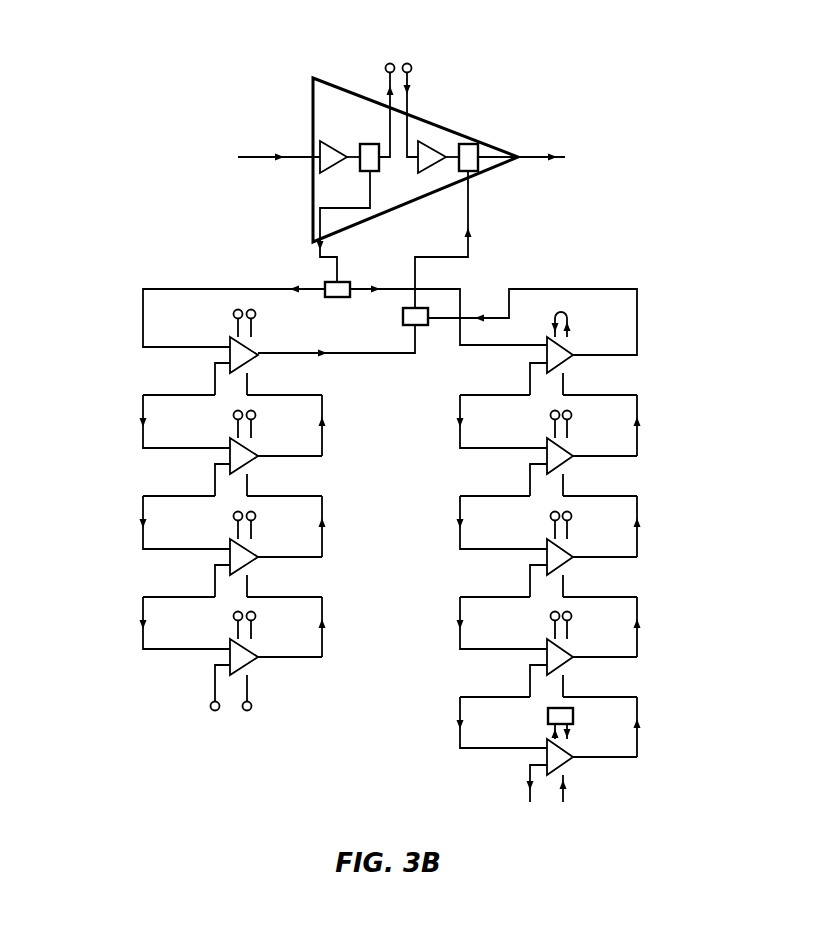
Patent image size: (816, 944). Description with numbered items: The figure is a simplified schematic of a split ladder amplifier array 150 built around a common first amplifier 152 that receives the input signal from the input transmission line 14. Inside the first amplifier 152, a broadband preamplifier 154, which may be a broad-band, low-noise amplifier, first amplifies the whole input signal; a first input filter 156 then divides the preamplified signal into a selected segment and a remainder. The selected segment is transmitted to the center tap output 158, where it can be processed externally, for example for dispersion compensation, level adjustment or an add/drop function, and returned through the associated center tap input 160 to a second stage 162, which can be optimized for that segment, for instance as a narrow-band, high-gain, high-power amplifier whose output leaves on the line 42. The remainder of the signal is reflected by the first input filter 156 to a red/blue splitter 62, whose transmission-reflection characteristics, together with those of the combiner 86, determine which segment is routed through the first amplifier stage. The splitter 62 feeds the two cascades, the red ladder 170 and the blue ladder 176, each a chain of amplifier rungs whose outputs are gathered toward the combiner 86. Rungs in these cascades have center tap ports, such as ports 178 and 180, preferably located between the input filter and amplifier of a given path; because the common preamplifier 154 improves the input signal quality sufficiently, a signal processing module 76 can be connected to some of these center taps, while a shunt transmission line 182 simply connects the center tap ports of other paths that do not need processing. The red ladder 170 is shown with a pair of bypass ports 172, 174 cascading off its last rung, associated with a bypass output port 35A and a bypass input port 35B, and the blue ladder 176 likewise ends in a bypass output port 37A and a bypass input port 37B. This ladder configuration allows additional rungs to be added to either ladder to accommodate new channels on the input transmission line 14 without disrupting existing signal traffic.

The input transmission line 14 is at (253, 157).
The output signal line 42 is at (545, 157).
The red/blue splitter 62 is at (351, 283).
The signal processing module 76 is at (548, 716).
The combiner 86 is at (403, 316).
The split ladder amplifier array 150 is at (638, 165).
The first amplifier 152 is at (357, 95).
The broadband preamplifier 154 is at (316, 152).
The first input filter 156 is at (366, 143).
The center tap output 158 is at (390, 63).
The center tap input 160 is at (407, 63).
The second stage 162 is at (426, 143).
The red ladder 170 is at (104, 417).
The bypass port 172 is at (214, 711).
The bypass port 174 is at (248, 711).
The blue ladder 176 is at (680, 415).
The center tap port 178 is at (233, 333).
The center tap port 180 is at (255, 333).
The shunt transmission line 182 is at (561, 312).
The bypass output port 35A is at (212, 686).
The bypass input port 35B is at (250, 686).
The bypass output port 37A is at (528, 796).
The bypass input port 37B is at (565, 796).